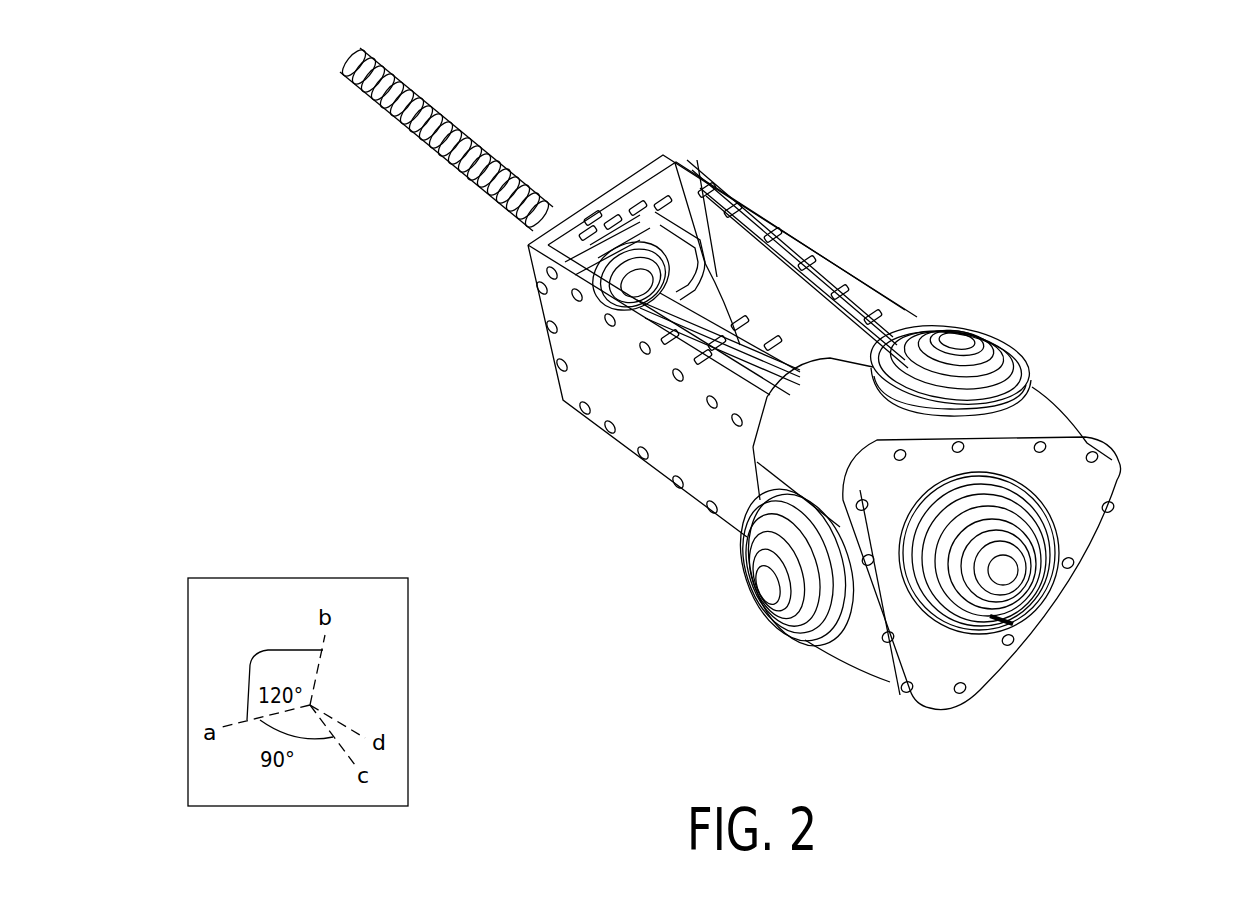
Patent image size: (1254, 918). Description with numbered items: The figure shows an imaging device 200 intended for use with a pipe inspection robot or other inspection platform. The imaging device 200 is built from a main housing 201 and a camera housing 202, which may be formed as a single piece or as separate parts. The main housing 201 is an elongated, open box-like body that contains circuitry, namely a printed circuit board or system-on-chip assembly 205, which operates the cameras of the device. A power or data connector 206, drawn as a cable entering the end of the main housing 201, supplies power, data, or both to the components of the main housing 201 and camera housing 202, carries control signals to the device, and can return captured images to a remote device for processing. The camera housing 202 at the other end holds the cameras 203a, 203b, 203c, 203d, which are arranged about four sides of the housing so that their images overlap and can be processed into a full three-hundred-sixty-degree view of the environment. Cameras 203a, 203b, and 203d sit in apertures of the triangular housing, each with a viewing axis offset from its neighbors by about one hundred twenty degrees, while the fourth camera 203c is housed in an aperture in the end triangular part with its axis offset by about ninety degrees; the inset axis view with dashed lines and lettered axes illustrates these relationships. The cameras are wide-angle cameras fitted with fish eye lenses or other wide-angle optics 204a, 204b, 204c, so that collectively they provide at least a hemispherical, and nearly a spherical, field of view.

The imaging device 200 is at (970, 158).
The main housing 201 is at (548, 357).
The camera housing 202 is at (1060, 400).
The camera 203a is at (752, 595).
The camera 203b is at (975, 327).
The camera 203c is at (1010, 615).
The camera 203d is at (1057, 611).
The wide-angle optics 204a is at (765, 605).
The wide-angle optics 204b is at (960, 328).
The wide-angle optics 204c is at (1008, 571).
The printed circuit board or system-on-chip assembly 205 is at (706, 302).
The power or data connector 206 is at (437, 148).